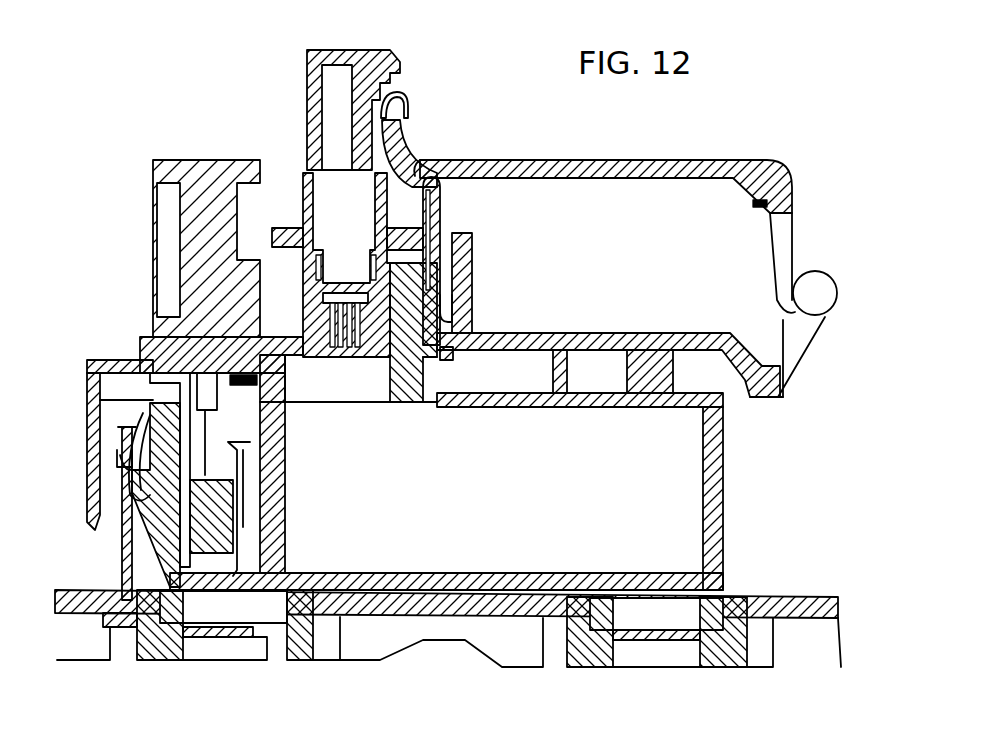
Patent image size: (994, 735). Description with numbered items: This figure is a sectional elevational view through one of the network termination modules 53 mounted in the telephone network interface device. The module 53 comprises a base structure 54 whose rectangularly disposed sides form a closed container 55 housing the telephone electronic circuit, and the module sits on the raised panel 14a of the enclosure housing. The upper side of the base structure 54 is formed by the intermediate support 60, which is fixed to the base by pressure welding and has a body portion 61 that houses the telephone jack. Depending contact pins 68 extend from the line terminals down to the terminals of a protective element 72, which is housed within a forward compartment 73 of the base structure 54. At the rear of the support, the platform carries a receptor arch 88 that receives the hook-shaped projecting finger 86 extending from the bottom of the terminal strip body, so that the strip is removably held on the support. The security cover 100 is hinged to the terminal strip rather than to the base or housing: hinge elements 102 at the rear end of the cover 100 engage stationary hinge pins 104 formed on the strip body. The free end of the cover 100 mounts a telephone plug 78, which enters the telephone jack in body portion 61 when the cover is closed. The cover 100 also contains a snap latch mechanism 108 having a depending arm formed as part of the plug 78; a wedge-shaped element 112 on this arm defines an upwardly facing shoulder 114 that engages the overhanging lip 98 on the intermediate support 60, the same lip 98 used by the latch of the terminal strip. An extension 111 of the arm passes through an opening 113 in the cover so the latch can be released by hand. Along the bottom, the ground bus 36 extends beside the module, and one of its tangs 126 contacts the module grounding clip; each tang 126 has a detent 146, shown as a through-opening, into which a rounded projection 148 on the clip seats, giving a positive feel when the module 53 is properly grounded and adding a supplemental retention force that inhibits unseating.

The raised panel 14a is at (786, 598).
The ground bus 36 is at (124, 547).
The network termination module 53 is at (128, 258).
The base structure 54 is at (150, 345).
The closed container 55 is at (724, 490).
The intermediate support 60 is at (513, 408).
The body portion 61 is at (300, 356).
The depending contact pins 68 is at (250, 418).
The protective element 72 is at (208, 535).
The forward compartment 73 is at (248, 450).
The telephone plug 78 is at (318, 356).
The hook-shaped projecting finger 86 is at (760, 380).
The receptor arch 88 is at (776, 368).
The overhanging lip 98 is at (428, 250).
The security cover 100 is at (676, 162).
The hinge elements 102 is at (776, 238).
The stationary hinge pins 104 is at (812, 278).
The snap latch mechanism 108 is at (440, 172).
The extension of the arm 111 is at (396, 124).
The wedge-shaped element 112 is at (446, 320).
The opening 113 is at (408, 152).
The upwardly facing shoulder 114 is at (462, 241).
The tang 126 is at (122, 415).
The detent 146 is at (123, 458).
The projection 148 is at (124, 464).